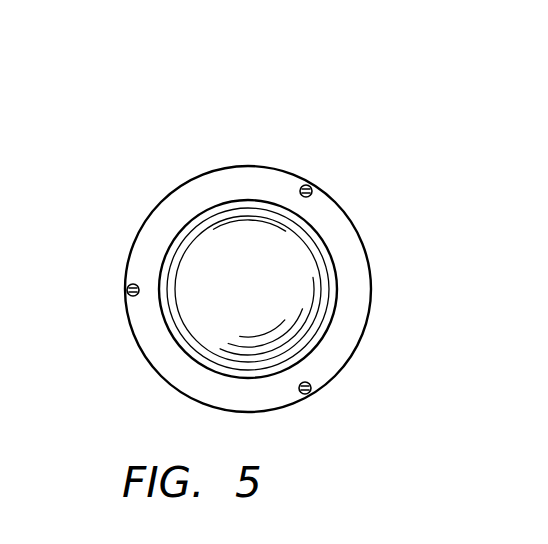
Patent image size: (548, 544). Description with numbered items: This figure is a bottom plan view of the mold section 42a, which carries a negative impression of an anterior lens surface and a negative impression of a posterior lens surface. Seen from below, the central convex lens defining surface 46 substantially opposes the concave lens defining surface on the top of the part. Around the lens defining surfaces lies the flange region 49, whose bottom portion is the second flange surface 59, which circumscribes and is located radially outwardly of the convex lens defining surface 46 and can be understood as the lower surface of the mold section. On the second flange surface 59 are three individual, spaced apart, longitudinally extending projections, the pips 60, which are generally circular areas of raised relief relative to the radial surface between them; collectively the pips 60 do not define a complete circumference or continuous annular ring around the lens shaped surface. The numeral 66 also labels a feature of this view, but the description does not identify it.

The mold section 42a is at (360, 232).
The convex lens defining surface 46 is at (256, 294).
The flange region 49 is at (268, 168).
The second flange surface 59 is at (358, 309).
The pips 60 is at (301, 186).
The flange 66 is at (148, 237).